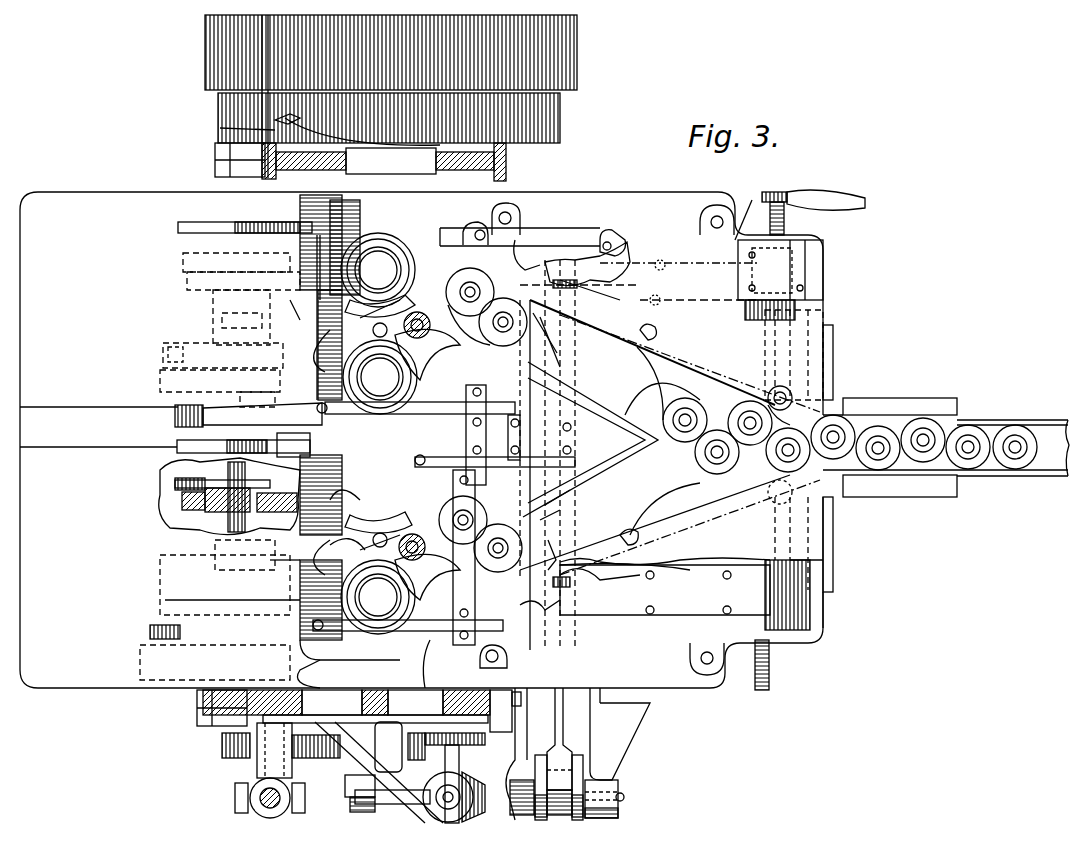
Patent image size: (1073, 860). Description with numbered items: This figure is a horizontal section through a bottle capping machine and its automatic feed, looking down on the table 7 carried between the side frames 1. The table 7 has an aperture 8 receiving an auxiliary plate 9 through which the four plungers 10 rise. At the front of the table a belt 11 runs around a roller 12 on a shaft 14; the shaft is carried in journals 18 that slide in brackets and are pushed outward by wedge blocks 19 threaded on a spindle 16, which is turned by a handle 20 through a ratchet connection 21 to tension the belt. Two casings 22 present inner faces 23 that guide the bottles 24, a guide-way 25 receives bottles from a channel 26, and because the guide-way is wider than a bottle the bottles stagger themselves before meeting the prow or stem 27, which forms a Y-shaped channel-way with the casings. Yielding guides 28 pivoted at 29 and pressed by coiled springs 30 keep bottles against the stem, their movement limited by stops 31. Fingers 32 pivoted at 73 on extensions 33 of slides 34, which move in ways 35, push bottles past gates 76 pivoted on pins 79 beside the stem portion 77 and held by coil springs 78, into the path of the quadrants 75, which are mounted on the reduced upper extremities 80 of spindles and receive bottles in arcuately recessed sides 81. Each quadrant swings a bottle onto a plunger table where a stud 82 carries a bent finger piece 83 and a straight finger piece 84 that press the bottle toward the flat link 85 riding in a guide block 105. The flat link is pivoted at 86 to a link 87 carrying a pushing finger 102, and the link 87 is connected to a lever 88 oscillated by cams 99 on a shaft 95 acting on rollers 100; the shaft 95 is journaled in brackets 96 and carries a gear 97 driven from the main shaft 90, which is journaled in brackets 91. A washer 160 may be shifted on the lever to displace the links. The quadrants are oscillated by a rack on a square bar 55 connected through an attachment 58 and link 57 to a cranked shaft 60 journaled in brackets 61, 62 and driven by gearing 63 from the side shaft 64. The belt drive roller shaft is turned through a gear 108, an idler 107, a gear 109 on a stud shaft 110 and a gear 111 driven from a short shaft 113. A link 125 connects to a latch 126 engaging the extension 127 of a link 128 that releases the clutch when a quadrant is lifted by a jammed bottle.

The side frame 1 is at (506, 168).
The table 7 is at (421, 440).
The aperture 8 is at (341, 546).
The auxiliary table or plate 9 is at (339, 513).
The plunger 10 is at (345, 230).
The belt 11 is at (581, 455).
The roller 12 is at (823, 318).
The shaft 14 is at (823, 618).
The spindle 16 is at (785, 225).
The journal 18 is at (823, 275).
The wedge block 19 is at (725, 595).
The handle 20 is at (828, 200).
The ratchet connection 21 is at (800, 180).
The casing 22 is at (833, 358).
The inner face 23 is at (705, 345).
The bottle 24 is at (688, 445).
The guide-way 25 is at (875, 410).
The channel 26 is at (1005, 420).
The prow or stem 27 is at (665, 385).
The yielding guide 28 is at (670, 425).
The pivot 29 is at (646, 439).
The coiled spring 30 is at (655, 435).
The stop 31 is at (792, 395).
The finger 32 is at (553, 429).
The extension 33 is at (600, 308).
The slide 34 is at (600, 265).
The ways 35 is at (690, 272).
The square bar 55 is at (545, 218).
The link 57 is at (555, 715).
The attachment 58 is at (600, 440).
The cranked shaft 60 is at (624, 797).
The bracket 61 is at (600, 778).
The bracket 62 is at (505, 740).
The gearing 63 is at (476, 788).
The side shaft 64 is at (390, 792).
The pivot 73 is at (540, 620).
The quadrant 75 is at (470, 439).
The gate or stop 76 is at (500, 346).
The portion 77 is at (562, 520).
The coil spring 78 is at (545, 385).
The pivot pin 79 is at (567, 500).
The reduced upper extremity 80 is at (430, 340).
The arcuately recessed side 81 is at (415, 452).
The stud 82 is at (372, 328).
The bent finger piece 83 is at (408, 505).
The straight finger piece 84 is at (330, 338).
The flat link 85 is at (468, 225).
The pivot 86 is at (319, 674).
The link 87 is at (300, 222).
The lever 88 is at (185, 235).
The shaft 90 is at (293, 314).
The bracket 91 is at (225, 728).
The shaft 95 is at (222, 228).
The bracket 96 is at (215, 150).
The gear 97 is at (140, 655).
The cam 99 is at (286, 567).
The roller 100 is at (215, 325).
The pushing finger 102 is at (490, 270).
The guide block 105 is at (520, 208).
The idler 107 is at (533, 700).
The gear 108 is at (570, 640).
The gear 109 is at (421, 666).
The stud shaft 110 is at (445, 700).
The gear 111 is at (559, 793).
The short shaft 113 is at (445, 775).
The link 125 is at (330, 125).
The latch 126 is at (220, 128).
The extension 127 is at (275, 120).
The link 128 is at (270, 47).
The washer 160 is at (312, 250).